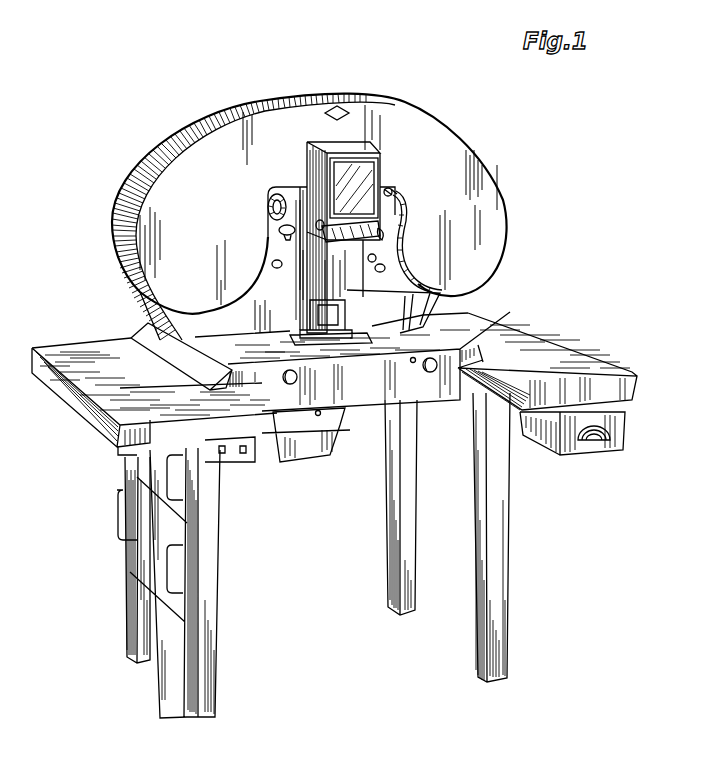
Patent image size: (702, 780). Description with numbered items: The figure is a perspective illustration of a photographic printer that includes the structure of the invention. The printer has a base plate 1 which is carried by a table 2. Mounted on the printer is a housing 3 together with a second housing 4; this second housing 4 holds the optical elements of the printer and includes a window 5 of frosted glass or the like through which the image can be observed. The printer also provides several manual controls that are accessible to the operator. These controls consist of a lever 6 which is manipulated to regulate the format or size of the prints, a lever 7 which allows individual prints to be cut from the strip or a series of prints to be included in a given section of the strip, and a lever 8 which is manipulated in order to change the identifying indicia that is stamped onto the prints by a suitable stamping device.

The base plate 1 is at (385, 377).
The table 2 is at (540, 347).
The housing 3 is at (392, 188).
The second housing 4 is at (355, 285).
The window 5 is at (378, 152).
The lever 6 is at (267, 215).
The lever 7 is at (280, 231).
The lever 8 is at (404, 208).